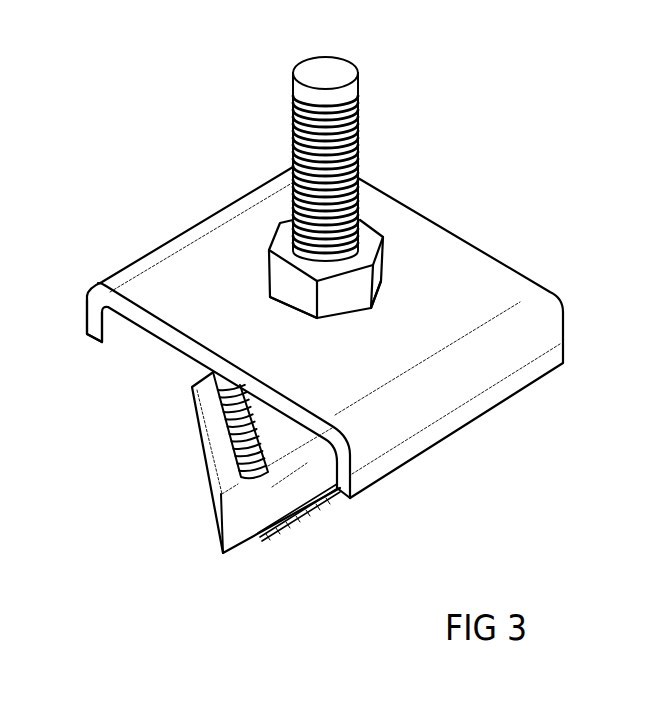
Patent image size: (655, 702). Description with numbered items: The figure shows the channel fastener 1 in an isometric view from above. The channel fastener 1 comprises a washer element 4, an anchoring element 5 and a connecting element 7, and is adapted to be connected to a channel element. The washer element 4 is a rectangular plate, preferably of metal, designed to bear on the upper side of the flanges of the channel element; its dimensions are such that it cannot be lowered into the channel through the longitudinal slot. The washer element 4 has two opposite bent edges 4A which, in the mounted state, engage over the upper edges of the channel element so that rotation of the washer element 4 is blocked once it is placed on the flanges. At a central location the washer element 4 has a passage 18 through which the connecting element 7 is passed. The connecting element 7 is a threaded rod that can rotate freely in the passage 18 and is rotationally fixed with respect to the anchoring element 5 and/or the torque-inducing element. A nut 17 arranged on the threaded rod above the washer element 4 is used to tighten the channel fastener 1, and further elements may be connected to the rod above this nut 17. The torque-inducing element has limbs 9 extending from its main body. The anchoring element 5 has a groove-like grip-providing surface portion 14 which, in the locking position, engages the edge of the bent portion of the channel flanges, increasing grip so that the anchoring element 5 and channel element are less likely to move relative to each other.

The channel fastener 1 is at (324, 350).
The washer element 4 is at (428, 248).
The bent edges 4A is at (85, 308).
The anchoring element 5 is at (247, 520).
The connecting element 7 is at (292, 128).
The limbs 9 is at (312, 505).
The grip-providing surface portion 14 is at (217, 423).
The nut 17 is at (266, 283).
The passage 18 is at (350, 328).